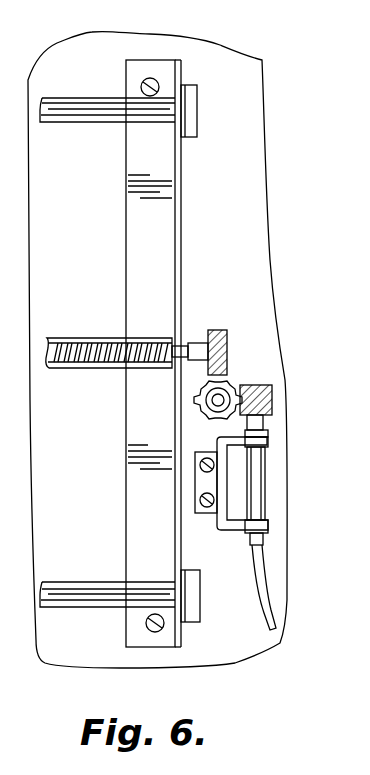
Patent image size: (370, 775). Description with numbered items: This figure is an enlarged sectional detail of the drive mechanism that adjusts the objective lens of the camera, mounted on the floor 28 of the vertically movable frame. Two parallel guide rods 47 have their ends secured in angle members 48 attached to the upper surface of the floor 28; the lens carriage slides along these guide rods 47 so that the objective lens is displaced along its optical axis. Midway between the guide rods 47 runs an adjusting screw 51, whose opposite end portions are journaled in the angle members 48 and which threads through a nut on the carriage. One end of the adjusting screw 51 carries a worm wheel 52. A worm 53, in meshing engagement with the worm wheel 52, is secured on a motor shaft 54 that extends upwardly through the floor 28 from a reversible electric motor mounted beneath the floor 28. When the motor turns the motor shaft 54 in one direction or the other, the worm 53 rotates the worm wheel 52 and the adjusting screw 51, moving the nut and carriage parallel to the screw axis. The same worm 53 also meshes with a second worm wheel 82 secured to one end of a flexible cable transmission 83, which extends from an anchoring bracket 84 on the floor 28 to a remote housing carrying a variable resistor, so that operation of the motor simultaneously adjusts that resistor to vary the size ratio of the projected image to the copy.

The floor 28 is at (238, 68).
The guide rods 47 is at (90, 115).
The angle members 48 is at (177, 210).
The adjusting screw 51 is at (75, 338).
The worm wheel 52 is at (222, 330).
The worm 53 is at (242, 385).
The motor shaft 54 is at (216, 402).
The worm wheel 82 is at (274, 392).
The flexible cable transmission 83 is at (260, 575).
The anchoring bracket 84 is at (234, 530).